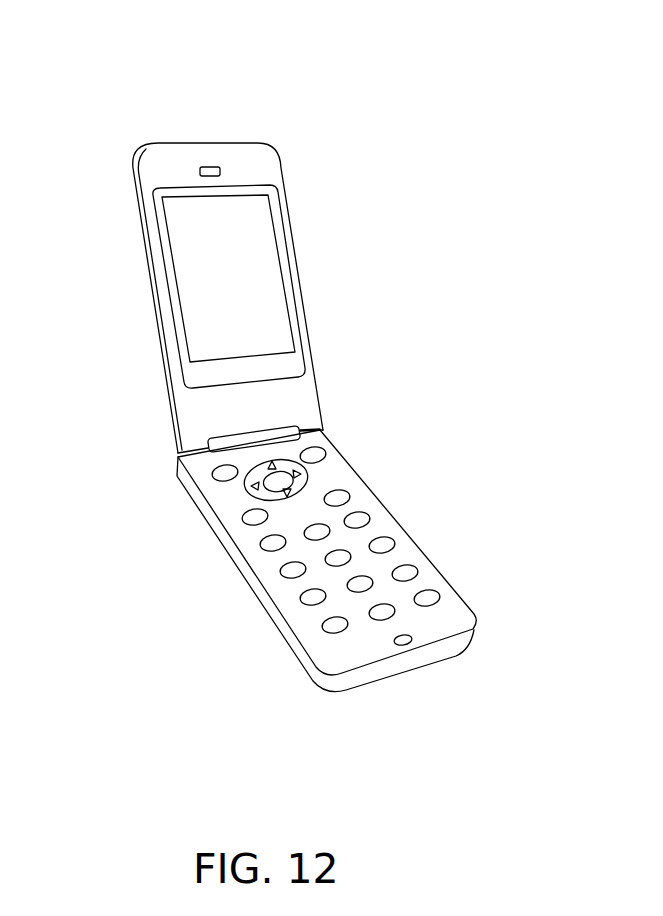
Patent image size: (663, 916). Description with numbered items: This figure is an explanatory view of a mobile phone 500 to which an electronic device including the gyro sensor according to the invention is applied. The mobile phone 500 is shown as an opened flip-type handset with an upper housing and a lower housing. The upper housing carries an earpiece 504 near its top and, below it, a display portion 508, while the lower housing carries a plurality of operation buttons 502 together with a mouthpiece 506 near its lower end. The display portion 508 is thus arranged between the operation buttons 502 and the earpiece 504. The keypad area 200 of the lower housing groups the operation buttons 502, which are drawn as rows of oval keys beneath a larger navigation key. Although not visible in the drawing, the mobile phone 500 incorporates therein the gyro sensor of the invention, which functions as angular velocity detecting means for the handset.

The mobile phone 500 is at (291, 370).
The earpiece 504 is at (209, 163).
The display portion 508 is at (198, 265).
The keypad input device 200 is at (354, 519).
The operation buttons 502 is at (357, 520).
The mouthpiece 506 is at (403, 640).